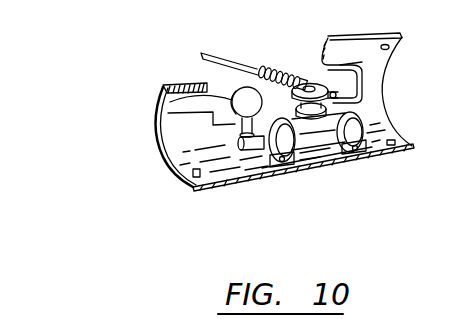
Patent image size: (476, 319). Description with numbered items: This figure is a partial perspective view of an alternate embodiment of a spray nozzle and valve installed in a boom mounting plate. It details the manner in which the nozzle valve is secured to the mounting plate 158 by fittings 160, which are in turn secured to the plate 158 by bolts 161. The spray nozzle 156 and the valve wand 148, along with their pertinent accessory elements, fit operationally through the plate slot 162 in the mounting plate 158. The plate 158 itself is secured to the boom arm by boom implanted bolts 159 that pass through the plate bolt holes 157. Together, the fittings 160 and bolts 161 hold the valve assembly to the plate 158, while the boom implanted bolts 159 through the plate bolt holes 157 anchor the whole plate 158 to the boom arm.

The valve wand 148 is at (227, 63).
The spray nozzle 156 is at (165, 108).
The plate bolt holes 157 is at (392, 47).
The mounting plate 158 is at (378, 76).
The boom implanted bolts 159 is at (383, 112).
The fittings 160 is at (404, 141).
The bolts 161 is at (352, 148).
The plate slot 162 is at (158, 125).